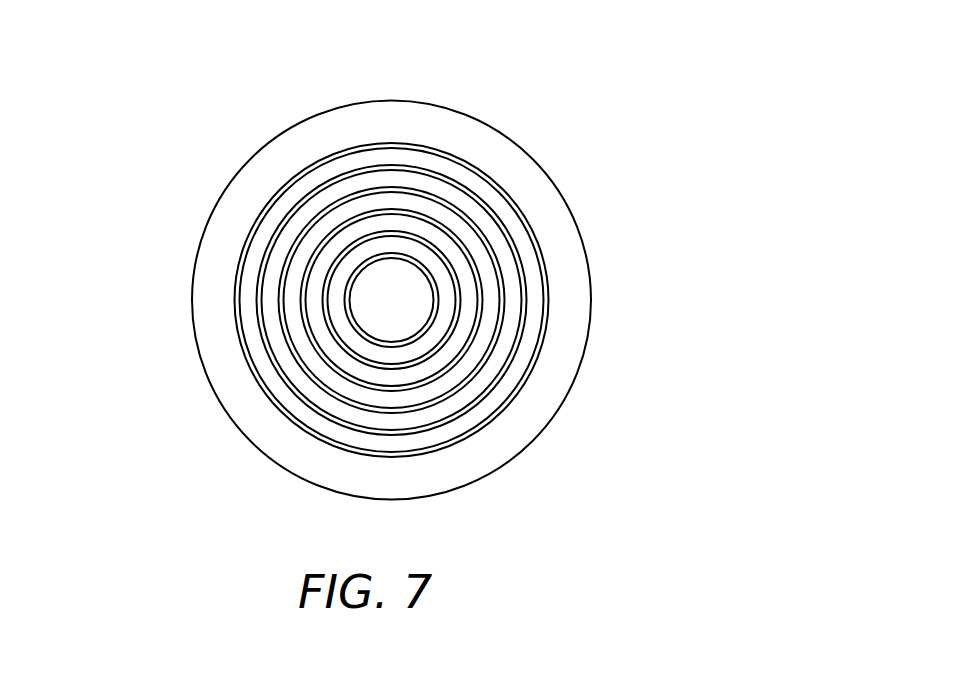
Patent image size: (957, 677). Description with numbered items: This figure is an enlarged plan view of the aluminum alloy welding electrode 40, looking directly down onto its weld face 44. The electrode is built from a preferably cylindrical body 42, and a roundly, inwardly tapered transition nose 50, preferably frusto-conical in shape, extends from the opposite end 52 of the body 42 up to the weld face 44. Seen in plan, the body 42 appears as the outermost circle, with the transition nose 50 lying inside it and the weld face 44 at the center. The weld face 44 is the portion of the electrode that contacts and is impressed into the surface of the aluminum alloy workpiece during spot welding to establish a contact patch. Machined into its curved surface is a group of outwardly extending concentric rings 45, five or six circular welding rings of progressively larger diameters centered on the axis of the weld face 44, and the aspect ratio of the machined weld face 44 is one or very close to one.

The aluminum alloy welding electrode 40 is at (630, 317).
The body 42 is at (590, 262).
The weld face 44 is at (452, 195).
The concentric rings 45 is at (348, 303).
The transition nose 50 is at (550, 228).
The opposite end 52 is at (262, 150).